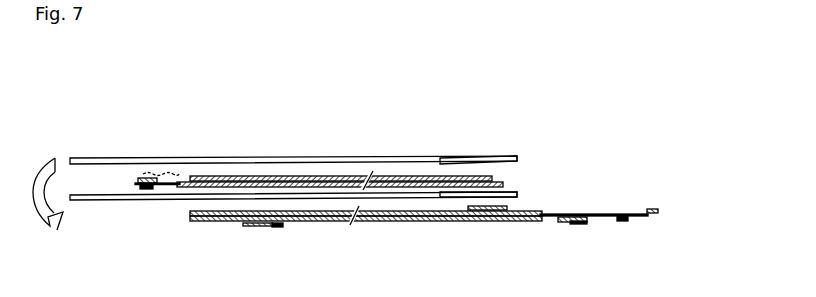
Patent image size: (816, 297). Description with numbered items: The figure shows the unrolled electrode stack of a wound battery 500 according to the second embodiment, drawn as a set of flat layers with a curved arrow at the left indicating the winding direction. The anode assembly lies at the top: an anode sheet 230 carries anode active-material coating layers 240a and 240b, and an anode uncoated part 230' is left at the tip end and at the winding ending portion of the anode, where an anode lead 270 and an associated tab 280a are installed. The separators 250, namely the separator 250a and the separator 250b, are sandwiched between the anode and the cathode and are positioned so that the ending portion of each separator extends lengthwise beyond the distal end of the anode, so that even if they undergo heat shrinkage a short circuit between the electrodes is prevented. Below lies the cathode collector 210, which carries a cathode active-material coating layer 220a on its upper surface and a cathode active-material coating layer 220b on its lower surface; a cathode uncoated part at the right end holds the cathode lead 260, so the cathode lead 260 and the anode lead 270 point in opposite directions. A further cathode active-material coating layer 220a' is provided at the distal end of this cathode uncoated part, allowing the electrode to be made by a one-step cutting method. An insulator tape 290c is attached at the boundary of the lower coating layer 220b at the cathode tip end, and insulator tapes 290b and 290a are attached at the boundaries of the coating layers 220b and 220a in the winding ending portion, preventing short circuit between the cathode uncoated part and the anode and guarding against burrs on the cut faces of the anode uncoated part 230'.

The display device 500 is at (471, 93).
The cathode collector 210 is at (633, 212).
The cathode active-material coating layer 220a is at (366, 244).
The cathode active-material coating layer 220b is at (418, 222).
The cathode active-material coating layer 220a' is at (665, 242).
The upper plate 230 is at (293, 144).
The anode uncoated part 230' is at (324, 150).
The first film layer 240a is at (430, 182).
The second film layer 240b is at (341, 176).
The separators 250 is at (571, 148).
The separator 250a is at (520, 158).
The separator 250b is at (520, 194).
The cathode lead 260 is at (622, 222).
The anode lead 270 is at (148, 191).
The upper connection member 280a is at (125, 177).
The insulator tape 290a is at (570, 225).
The insulator tape 290b is at (493, 223).
The insulator tape 290c is at (265, 227).